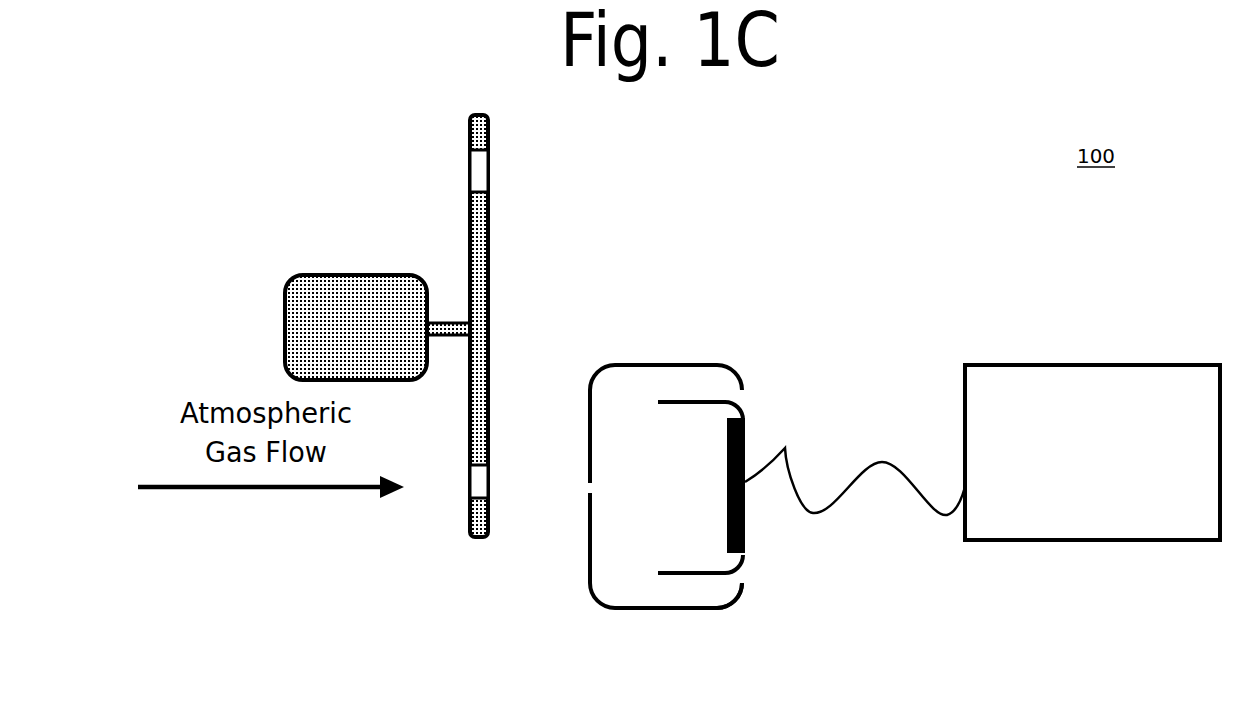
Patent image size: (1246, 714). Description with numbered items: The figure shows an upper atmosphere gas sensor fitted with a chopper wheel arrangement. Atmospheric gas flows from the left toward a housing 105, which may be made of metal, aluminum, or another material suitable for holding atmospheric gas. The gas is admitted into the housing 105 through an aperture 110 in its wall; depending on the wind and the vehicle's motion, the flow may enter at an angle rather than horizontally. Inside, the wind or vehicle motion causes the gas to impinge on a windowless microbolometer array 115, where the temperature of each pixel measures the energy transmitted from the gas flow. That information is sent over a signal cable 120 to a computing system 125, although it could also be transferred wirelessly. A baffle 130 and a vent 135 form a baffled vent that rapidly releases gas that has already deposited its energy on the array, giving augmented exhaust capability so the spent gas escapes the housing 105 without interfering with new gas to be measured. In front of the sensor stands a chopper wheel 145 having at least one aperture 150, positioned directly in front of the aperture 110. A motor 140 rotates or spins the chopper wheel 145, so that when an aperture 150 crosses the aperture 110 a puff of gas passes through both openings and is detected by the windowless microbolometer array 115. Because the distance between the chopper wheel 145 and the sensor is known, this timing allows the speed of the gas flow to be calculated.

The housing 105 is at (708, 353).
The aperture 110 is at (580, 502).
The windowless microbolometer array 115 is at (763, 532).
The signal cable 120 is at (810, 470).
The computing system 125 is at (1092, 452).
The baffle 130 is at (680, 583).
The vent 135 is at (750, 598).
The motor 140 is at (262, 297).
The chopper wheel 145 is at (493, 263).
The aperture 150 is at (443, 180).